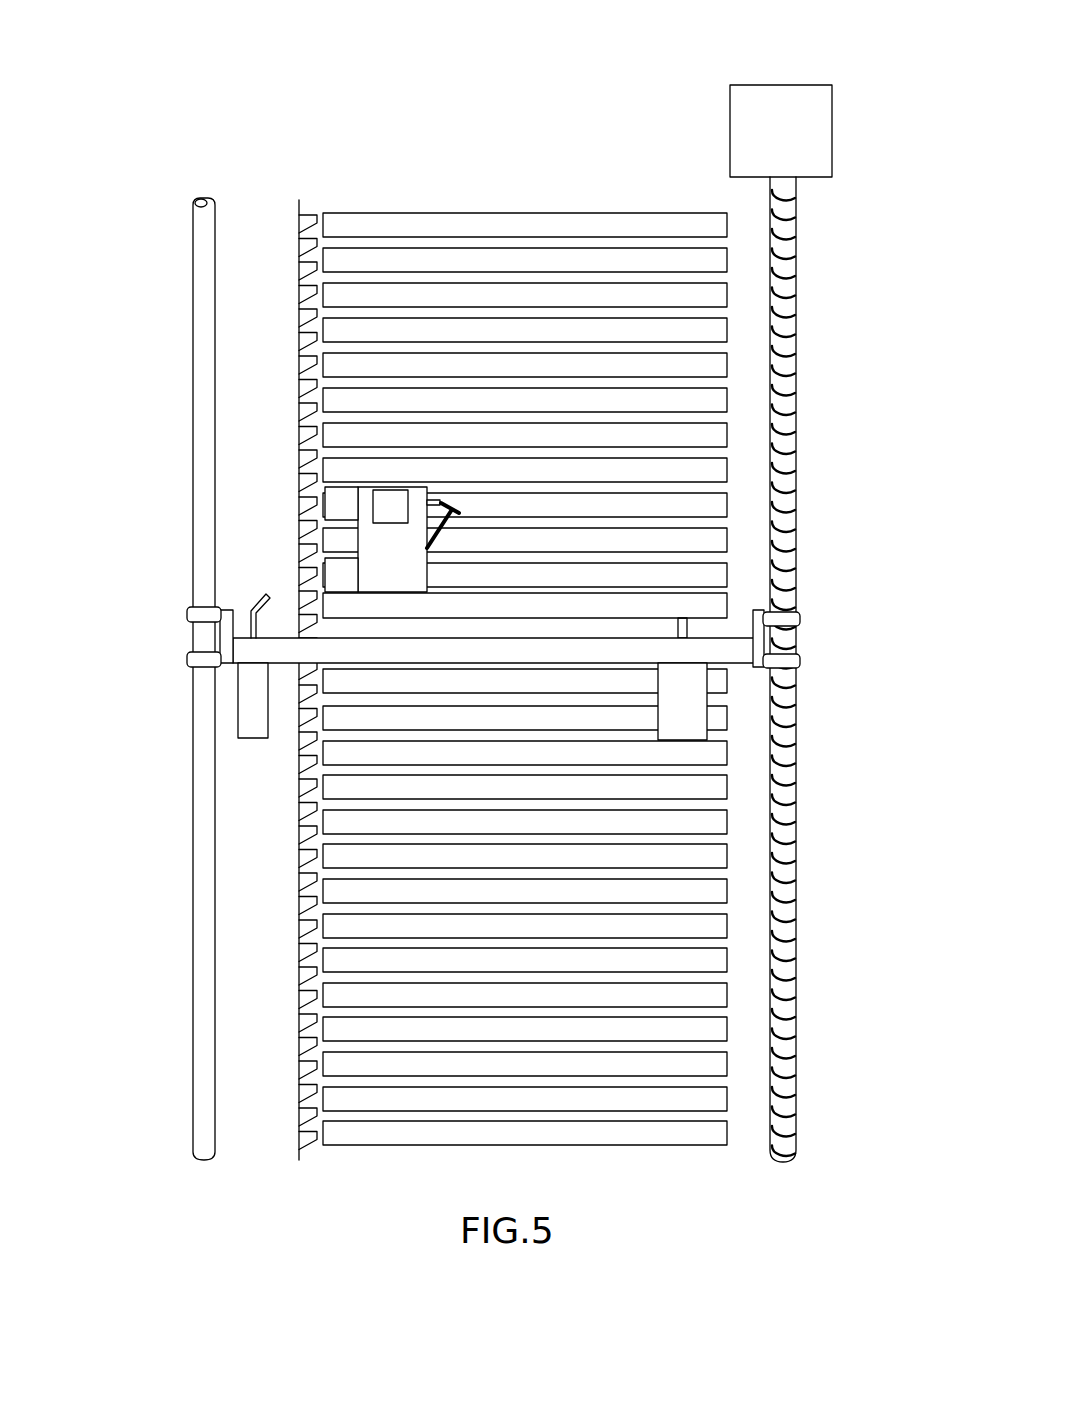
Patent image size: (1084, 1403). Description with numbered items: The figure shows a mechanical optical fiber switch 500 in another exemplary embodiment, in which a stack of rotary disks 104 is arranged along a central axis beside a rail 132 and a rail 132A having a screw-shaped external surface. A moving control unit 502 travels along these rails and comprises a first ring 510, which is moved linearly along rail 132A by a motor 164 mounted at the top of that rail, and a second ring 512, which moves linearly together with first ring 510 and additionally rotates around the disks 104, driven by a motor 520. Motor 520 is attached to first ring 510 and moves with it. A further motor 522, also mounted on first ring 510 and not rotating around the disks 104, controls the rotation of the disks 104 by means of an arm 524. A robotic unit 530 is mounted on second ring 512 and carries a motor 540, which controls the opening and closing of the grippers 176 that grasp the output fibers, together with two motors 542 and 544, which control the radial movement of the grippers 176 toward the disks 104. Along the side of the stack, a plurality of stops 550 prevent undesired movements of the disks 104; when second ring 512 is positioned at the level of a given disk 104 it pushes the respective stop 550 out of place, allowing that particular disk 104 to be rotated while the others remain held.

The rotary disk 104 is at (410, 248).
The rail 132 is at (193, 447).
The rail with screw-shaped external surface 132A is at (790, 418).
The motor 164 is at (755, 85).
The gripper 176 is at (430, 547).
The switch 500 is at (230, 56).
The moving control unit 502 is at (170, 635).
The first ring 510 is at (735, 665).
The second ring 512 is at (697, 593).
The motor 520 is at (707, 717).
The motor 522 is at (238, 710).
The arm 524 is at (250, 600).
The robotic unit 530 is at (378, 545).
The motor 540 is at (325, 497).
The motor 542 is at (390, 487).
The motor 544 is at (325, 572).
The stop 550 is at (298, 293).